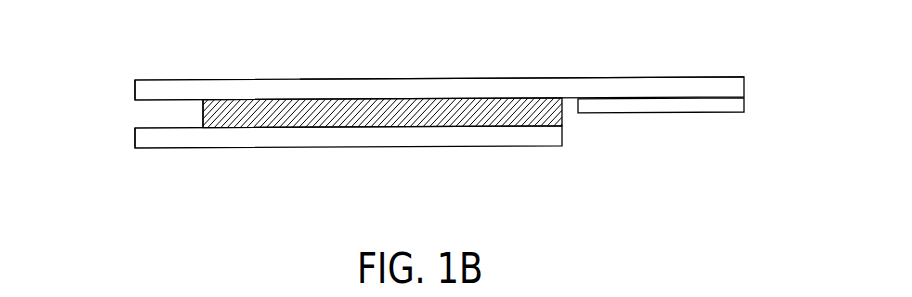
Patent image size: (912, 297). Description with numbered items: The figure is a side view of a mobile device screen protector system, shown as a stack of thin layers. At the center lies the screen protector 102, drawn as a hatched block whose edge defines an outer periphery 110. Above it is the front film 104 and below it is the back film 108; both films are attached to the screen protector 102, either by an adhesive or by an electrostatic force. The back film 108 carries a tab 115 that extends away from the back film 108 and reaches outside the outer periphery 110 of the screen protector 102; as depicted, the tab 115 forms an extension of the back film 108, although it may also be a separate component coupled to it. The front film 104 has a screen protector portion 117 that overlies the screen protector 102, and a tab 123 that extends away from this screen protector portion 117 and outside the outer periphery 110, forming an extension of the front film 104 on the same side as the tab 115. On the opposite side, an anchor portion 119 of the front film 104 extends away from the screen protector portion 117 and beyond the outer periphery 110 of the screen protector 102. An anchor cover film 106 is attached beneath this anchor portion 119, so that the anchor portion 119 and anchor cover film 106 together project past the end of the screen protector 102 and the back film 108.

The screen protector 102 is at (562, 113).
The front film 104 is at (269, 79).
The anchor cover film 106 is at (744, 104).
The back film 108 is at (363, 145).
The outer periphery 110 is at (203, 111).
The tab 115 is at (139, 137).
The screen protector portion 117 is at (418, 79).
The anchor portion 119 is at (653, 77).
The tab 123 is at (139, 92).